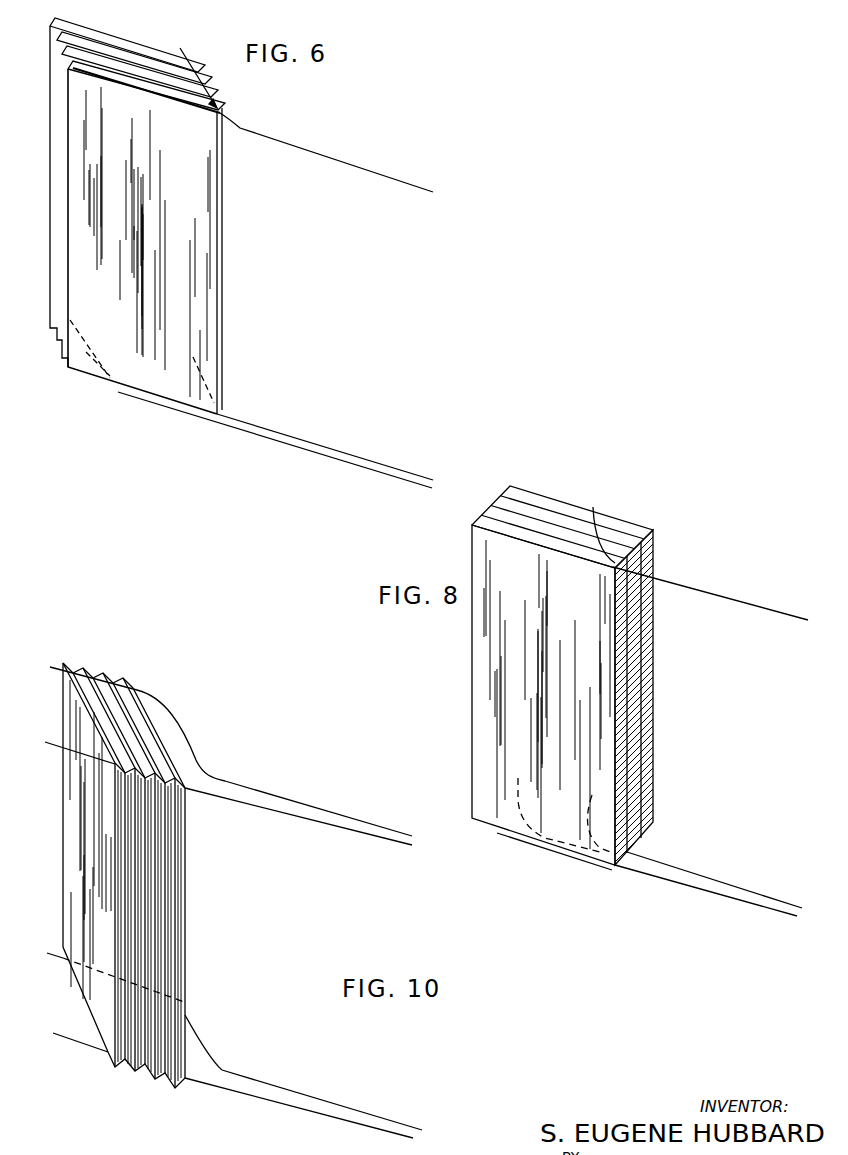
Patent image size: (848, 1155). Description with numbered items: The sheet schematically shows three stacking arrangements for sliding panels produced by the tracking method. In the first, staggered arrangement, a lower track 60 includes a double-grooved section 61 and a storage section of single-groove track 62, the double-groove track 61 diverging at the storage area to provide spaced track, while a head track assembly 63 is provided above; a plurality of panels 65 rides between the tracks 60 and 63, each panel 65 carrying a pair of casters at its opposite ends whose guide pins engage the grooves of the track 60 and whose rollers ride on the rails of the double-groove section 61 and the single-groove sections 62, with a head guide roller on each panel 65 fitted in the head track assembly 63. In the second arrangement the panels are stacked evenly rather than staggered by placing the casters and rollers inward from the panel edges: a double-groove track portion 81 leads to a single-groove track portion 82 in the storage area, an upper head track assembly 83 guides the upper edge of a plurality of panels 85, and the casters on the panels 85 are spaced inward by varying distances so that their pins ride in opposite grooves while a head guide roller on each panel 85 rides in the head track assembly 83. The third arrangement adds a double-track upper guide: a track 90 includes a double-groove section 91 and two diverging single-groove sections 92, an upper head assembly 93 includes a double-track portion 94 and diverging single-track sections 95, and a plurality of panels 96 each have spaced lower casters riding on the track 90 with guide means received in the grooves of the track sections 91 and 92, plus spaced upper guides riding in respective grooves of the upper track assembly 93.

In FIG. 6, the lower track 60 is at (362, 456).
In FIG. 6, the double-grooved section 61 is at (288, 437).
In FIG. 6, the single-groove track 62 is at (72, 373).
In FIG. 6, the head track assembly 63 is at (350, 164).
In FIG. 6, the panels 65 is at (202, 231).
In FIG. 8, the double-groove track portion 81 is at (708, 882).
In FIG. 8, the single-groove track portion 82 is at (588, 820).
In FIG. 8, the upper head track assembly 83 is at (697, 585).
In FIG. 8, the panels 85 is at (620, 637).
In FIG. 10, the track 90 is at (322, 1097).
In FIG. 10, the double-groove section 91 is at (393, 1126).
In FIG. 10, the single-groove sections 92 is at (190, 1033).
In FIG. 10, the upper head assembly 93 is at (336, 812).
In FIG. 10, the double-track portion 94 is at (378, 834).
In FIG. 10, the single-track sections 95 is at (178, 730).
In FIG. 10, the panels 96 is at (180, 853).